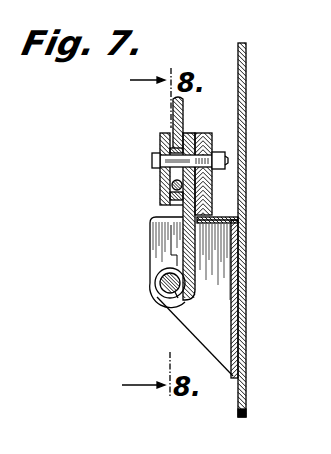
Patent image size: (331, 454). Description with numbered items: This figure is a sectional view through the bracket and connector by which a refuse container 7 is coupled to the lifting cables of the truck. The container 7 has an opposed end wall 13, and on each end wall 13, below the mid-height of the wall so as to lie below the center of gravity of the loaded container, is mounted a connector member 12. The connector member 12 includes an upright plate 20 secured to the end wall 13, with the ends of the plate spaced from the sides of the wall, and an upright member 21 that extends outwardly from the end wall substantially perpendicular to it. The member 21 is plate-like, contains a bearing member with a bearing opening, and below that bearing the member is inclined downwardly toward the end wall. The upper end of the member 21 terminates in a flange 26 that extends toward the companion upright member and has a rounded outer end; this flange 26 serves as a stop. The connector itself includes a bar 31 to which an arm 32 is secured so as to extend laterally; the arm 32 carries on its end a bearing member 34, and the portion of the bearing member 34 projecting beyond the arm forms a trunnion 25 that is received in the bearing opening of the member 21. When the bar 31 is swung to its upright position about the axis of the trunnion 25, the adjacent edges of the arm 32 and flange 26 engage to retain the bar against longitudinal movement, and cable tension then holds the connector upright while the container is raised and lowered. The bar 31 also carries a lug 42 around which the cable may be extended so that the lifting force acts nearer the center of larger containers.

The container 7 is at (247, 84).
The connector member 12 is at (157, 297).
The end wall 13 is at (243, 413).
The upright plate 20 is at (233, 300).
The upright member 21 is at (155, 249).
The trunnion 25 is at (163, 285).
The flange 26 is at (234, 219).
The bar 31 is at (207, 133).
The arm 32 is at (197, 272).
The bearing member 34 is at (168, 300).
The lug 42 is at (168, 173).